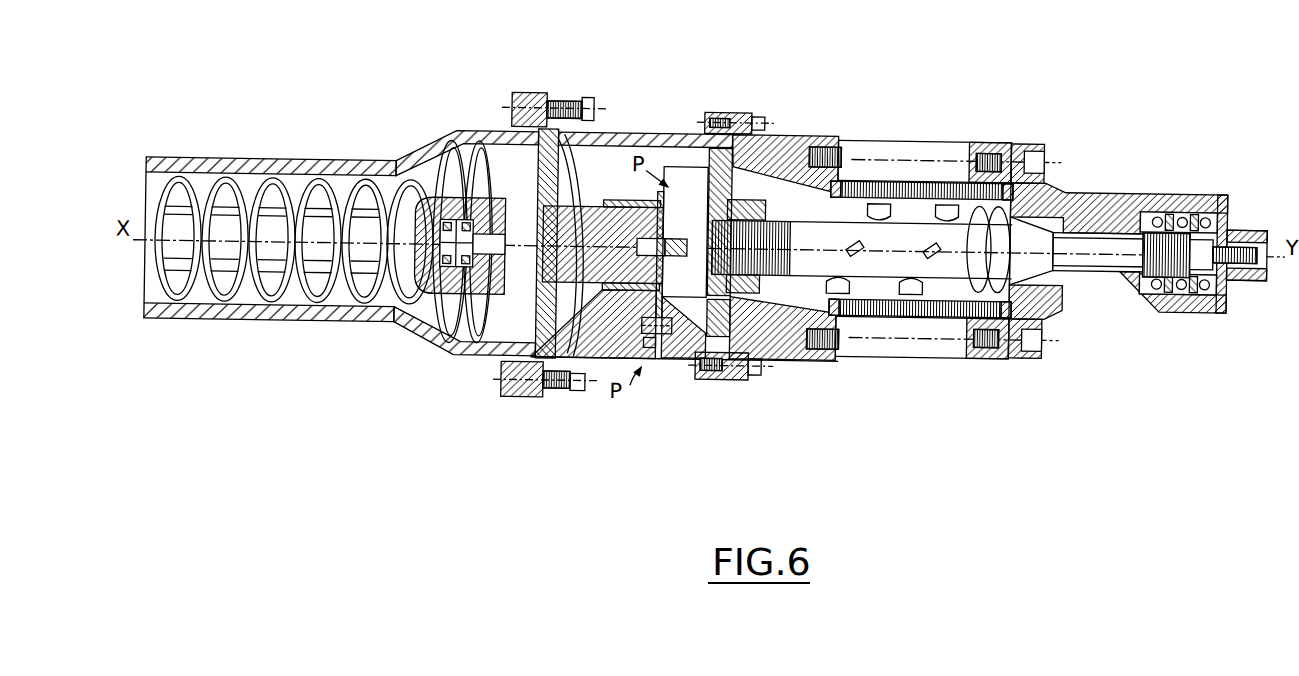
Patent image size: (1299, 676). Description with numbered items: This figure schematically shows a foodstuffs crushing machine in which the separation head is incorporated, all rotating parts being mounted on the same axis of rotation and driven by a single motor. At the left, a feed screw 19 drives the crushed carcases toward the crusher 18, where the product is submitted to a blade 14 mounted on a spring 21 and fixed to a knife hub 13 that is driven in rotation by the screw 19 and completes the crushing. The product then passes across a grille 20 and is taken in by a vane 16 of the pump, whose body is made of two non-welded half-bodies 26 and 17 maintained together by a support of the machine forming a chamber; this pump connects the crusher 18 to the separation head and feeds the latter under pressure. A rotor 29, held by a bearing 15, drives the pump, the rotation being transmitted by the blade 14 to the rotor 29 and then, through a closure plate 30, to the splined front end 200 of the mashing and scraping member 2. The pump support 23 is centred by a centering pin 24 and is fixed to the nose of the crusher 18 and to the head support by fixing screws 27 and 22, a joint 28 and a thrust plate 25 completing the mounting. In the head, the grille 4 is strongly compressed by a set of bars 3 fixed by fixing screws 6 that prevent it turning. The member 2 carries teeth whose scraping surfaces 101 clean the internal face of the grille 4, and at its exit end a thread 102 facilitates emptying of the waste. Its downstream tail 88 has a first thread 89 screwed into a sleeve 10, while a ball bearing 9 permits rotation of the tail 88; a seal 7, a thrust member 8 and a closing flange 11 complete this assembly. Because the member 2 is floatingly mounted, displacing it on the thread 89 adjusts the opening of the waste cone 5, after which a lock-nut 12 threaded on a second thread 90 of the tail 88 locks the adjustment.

The mashing and scraping member 2 is at (810, 213).
The set of bars 3 is at (890, 139).
The grille 4 is at (962, 160).
The waste cone 5 is at (1027, 180).
The fixing screws 6 is at (1050, 136).
The seal 7 is at (1147, 208).
The thrust member 8 is at (1163, 198).
The ball bearing 9 is at (1188, 181).
The sleeve 10 is at (1170, 278).
The closing flange 11 is at (1223, 291).
The lock-nut 12 is at (1257, 266).
The knife hub 13 is at (453, 145).
The blade 14 is at (527, 181).
The bearing 15 is at (605, 198).
The vane 16 is at (655, 162).
The half-body 17 is at (708, 150).
The crusher 18 is at (267, 316).
The feed screw 19 is at (347, 277).
The grille 20 is at (500, 370).
The spring 21 is at (432, 296).
The fixing screws 22 is at (553, 391).
The pump support 23 is at (605, 340).
The centering pin 24 is at (653, 340).
The thrust plate 25 is at (660, 349).
The half-body 26 is at (680, 329).
The fixing screws 27 is at (733, 364).
The joint 28 is at (773, 346).
The rotor 29 is at (560, 89).
The closure plate 30 is at (763, 128).
The tail 88 is at (1073, 289).
The first thread 89 is at (1073, 249).
The second thread 90 is at (1247, 233).
The scraping surface 101 is at (850, 230).
The thread 102 is at (950, 245).
The splined front end 200 is at (693, 126).